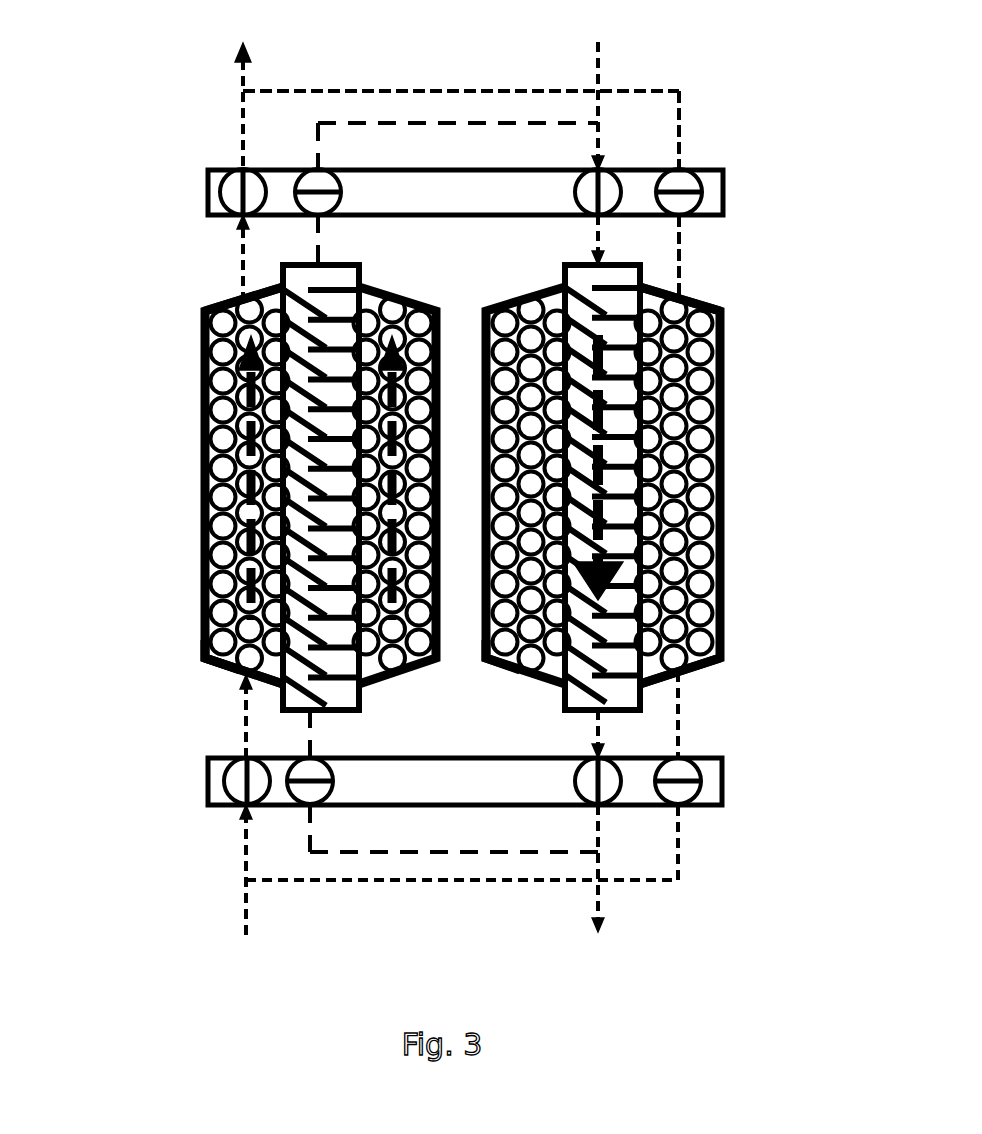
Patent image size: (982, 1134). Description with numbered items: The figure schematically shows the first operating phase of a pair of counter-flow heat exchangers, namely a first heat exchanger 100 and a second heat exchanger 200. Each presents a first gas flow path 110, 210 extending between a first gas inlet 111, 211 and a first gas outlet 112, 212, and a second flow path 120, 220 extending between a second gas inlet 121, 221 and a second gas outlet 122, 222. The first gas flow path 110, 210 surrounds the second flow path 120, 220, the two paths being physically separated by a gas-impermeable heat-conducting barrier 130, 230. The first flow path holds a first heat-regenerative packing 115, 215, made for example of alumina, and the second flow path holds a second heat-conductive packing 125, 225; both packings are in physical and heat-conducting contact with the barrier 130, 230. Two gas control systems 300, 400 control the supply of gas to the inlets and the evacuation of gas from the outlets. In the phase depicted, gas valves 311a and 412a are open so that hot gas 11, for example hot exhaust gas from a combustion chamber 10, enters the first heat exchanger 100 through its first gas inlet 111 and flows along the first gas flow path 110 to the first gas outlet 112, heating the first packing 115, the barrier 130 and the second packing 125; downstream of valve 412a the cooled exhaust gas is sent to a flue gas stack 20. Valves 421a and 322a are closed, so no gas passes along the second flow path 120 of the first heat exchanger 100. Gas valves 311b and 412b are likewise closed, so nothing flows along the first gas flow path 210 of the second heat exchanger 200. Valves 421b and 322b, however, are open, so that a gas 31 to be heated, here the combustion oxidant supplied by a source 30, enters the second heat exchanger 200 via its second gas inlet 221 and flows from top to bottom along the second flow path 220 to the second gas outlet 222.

The combustion chamber 10 is at (456, 821).
The hot gas 11 is at (242, 903).
The flue gas stack 20 is at (452, 157).
The source 30 is at (598, 139).
The gas to be heated 31 is at (600, 52).
The first heat exchanger 100 is at (274, 490).
The first gas flow path 110 is at (262, 489).
The first gas inlet 111 is at (225, 684).
The first gas outlet 112 is at (225, 297).
The first heat-regenerative packing 115 is at (410, 323).
The second flow path 120 is at (210, 640).
The second gas inlet 121 is at (322, 268).
The second gas outlet 122 is at (303, 714).
The second heat-conductive packing 125 is at (332, 670).
The barrier 130 is at (329, 490).
The second heat exchanger 200 is at (670, 493).
The first gas flow path 210 is at (644, 492).
The first gas inlet 211 is at (700, 691).
The first gas outlet 212 is at (704, 294).
The first heat-regenerative packing 215 is at (700, 647).
The second flow path 220 is at (503, 660).
The second gas inlet 221 is at (596, 260).
The second gas outlet 222 is at (598, 714).
The second heat-conductive packing 225 is at (615, 665).
The barrier 230 is at (575, 493).
The gas control system 300 is at (421, 789).
The gas valve 311a is at (235, 782).
The gas valve 311b is at (687, 794).
The valve 322a is at (321, 792).
The valve 322b is at (583, 786).
The gas control system 400 is at (416, 185).
The gas valve 412a is at (221, 170).
The gas valve 412b is at (683, 178).
The valve 421a is at (326, 176).
The valve 421b is at (587, 190).